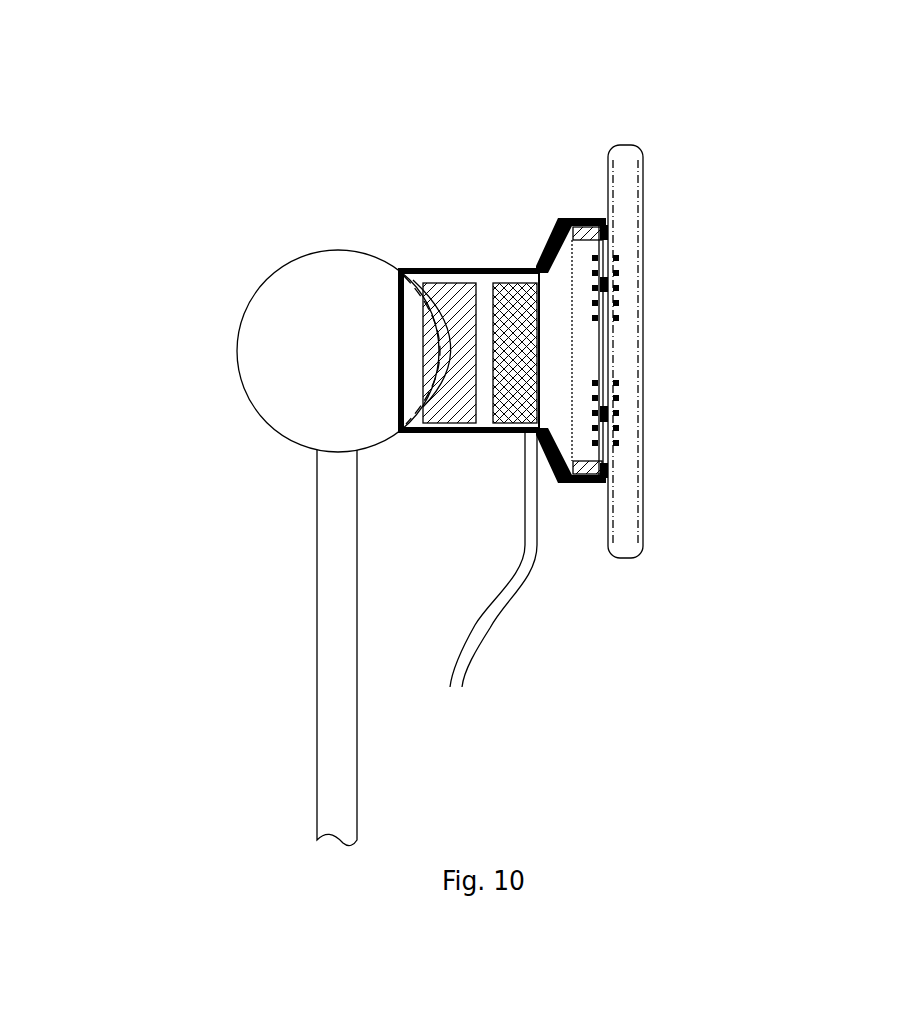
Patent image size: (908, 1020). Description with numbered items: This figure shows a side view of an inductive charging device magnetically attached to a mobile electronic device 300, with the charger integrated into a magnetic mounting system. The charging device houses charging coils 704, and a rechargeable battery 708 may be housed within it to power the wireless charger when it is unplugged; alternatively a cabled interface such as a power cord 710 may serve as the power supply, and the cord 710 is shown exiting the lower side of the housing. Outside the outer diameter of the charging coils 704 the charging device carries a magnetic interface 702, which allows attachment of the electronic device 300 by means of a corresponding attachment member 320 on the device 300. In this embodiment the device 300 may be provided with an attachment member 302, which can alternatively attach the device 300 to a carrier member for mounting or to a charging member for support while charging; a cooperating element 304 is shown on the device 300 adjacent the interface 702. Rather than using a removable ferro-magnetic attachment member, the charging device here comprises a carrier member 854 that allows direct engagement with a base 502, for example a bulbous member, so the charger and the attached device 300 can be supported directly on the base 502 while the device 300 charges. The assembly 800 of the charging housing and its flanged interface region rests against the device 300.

The electronic device 300 is at (633, 243).
The attachment member 302 is at (613, 417).
The device contacts 304 is at (617, 302).
The attachment member 320 is at (608, 232).
The base 502 is at (272, 312).
The magnetic interface 702 is at (577, 483).
The charging coils 704 is at (543, 267).
The rechargeable battery 708 is at (513, 288).
The power cord 710 is at (497, 605).
The mount 800 is at (572, 220).
The carrier member 854 is at (453, 393).